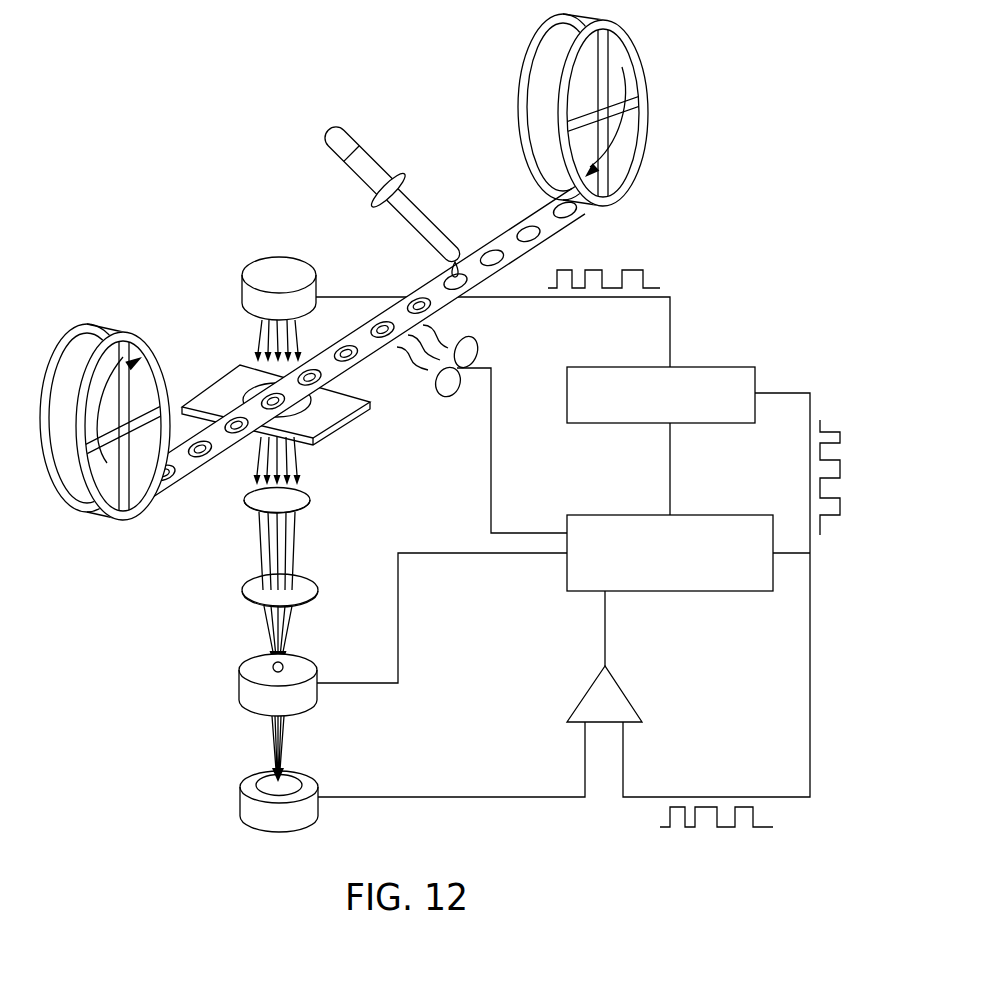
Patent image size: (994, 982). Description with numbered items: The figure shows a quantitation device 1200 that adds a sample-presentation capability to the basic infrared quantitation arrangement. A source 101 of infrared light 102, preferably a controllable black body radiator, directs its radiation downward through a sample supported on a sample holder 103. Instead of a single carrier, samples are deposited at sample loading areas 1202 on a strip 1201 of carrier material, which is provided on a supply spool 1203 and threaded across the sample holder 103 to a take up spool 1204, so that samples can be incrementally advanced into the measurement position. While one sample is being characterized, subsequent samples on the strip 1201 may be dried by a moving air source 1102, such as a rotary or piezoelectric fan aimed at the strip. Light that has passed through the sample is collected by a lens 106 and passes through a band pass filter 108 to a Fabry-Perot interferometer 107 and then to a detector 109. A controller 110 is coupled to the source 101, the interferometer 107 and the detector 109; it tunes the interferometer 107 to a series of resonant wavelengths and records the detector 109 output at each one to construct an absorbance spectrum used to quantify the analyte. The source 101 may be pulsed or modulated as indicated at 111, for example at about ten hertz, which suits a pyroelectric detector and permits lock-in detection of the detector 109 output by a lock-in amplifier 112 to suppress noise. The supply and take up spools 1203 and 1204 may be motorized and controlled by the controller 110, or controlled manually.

The quantitation device 1200 is at (188, 92).
The supply spool 1203 is at (527, 66).
The sample loading areas 1202 is at (517, 229).
The strip 1201 is at (553, 234).
The take up spool 1204 is at (78, 334).
The source 101 is at (252, 272).
The infrared light 102 is at (255, 340).
The sample holder 103 is at (218, 390).
The moving air source 1102 is at (481, 347).
The modulation 111 is at (733, 365).
The controller 110 is at (680, 523).
The lens 106 is at (253, 502).
The band pass filter 108 is at (252, 592).
The Fabry-Perot interferometer 107 is at (247, 690).
The detector 109 is at (248, 805).
The lock-in amplifier 112 is at (617, 705).